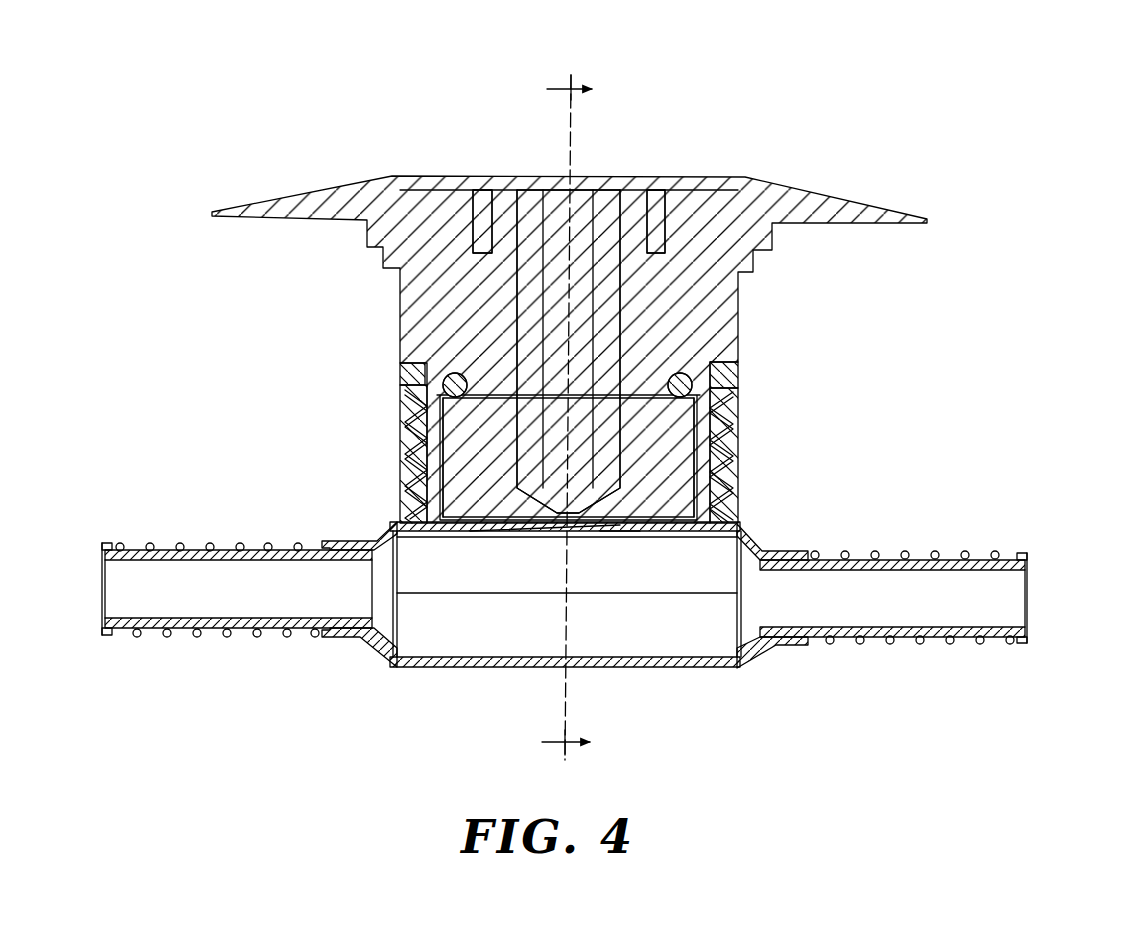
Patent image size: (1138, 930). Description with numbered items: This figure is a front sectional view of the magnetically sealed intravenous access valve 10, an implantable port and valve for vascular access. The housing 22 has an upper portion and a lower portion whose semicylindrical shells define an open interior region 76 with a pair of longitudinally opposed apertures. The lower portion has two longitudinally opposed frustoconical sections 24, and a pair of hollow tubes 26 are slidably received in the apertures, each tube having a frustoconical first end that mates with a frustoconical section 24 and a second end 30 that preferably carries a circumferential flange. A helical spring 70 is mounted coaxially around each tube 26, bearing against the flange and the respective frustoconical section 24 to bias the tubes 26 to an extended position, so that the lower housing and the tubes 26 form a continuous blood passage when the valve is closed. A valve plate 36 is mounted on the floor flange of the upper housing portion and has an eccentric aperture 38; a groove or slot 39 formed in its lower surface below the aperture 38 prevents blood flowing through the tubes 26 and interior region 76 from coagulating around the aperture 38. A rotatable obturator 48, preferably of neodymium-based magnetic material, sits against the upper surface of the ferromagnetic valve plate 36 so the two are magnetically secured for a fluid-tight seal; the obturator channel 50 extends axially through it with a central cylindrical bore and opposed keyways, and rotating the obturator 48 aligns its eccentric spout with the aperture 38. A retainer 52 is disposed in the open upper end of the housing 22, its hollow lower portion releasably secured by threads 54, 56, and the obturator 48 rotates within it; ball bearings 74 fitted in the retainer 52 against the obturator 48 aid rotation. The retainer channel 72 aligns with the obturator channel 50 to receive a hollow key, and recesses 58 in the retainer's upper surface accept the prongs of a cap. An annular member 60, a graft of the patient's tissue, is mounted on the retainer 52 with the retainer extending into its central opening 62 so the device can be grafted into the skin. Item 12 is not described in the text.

The magnetically sealed intravenous access valve 10 is at (1036, 116).
The connector body 12 is at (735, 717).
The housing 22 is at (738, 396).
The frustoconical sections 24 is at (373, 652).
The hollow tubes 26 is at (120, 545).
The second ends 30 is at (104, 636).
The valve plate 36 is at (467, 530).
The eccentric aperture 38 is at (618, 530).
The groove or slot 39 is at (545, 540).
The rotatable obturator 48 is at (460, 417).
The obturator channel 50 is at (602, 447).
The retainer 52 is at (740, 351).
The threads 54 is at (425, 462).
The threads 56 is at (425, 448).
The recesses 58 is at (478, 205).
The annular member 60 is at (870, 214).
The central opening 62 is at (535, 138).
The helical spring 70 is at (210, 545).
The retainer channel 72 is at (582, 205).
The ball bearings 74 is at (448, 377).
The open interior region 76 is at (470, 632).